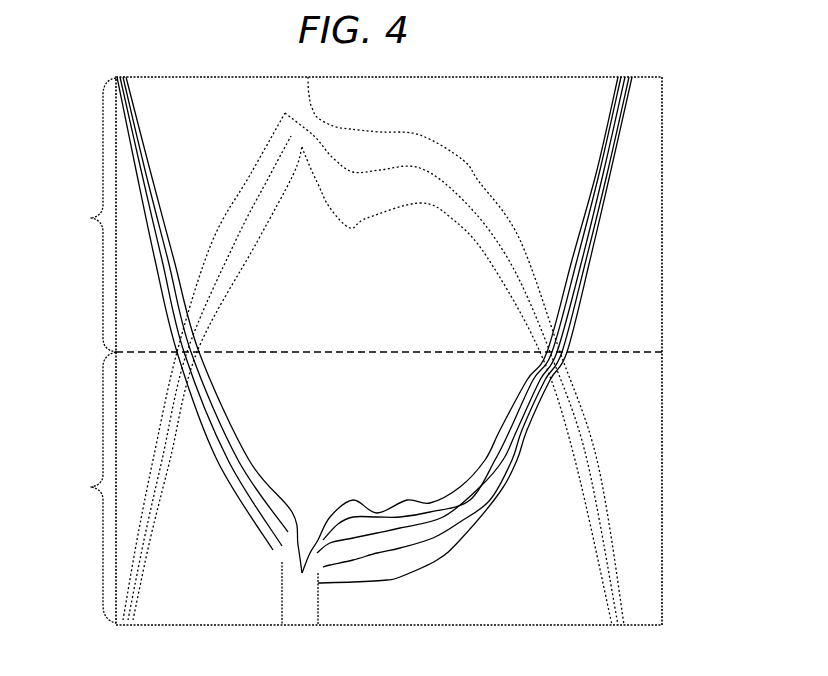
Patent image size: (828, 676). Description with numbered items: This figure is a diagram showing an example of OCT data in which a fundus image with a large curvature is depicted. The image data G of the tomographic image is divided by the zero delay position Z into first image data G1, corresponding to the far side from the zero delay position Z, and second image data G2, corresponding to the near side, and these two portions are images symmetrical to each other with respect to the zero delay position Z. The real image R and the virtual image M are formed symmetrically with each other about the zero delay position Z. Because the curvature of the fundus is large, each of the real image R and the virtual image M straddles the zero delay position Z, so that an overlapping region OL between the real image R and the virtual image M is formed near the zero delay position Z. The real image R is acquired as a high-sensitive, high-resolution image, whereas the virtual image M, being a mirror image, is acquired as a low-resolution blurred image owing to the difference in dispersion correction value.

The zero delay position Z is at (643, 352).
The image data G is at (80, 337).
The first image data G1 is at (85, 487).
The second image data G2 is at (83, 215).
The overlapping region OL is at (557, 343).
The virtual image M is at (473, 218).
The real image R is at (482, 485).